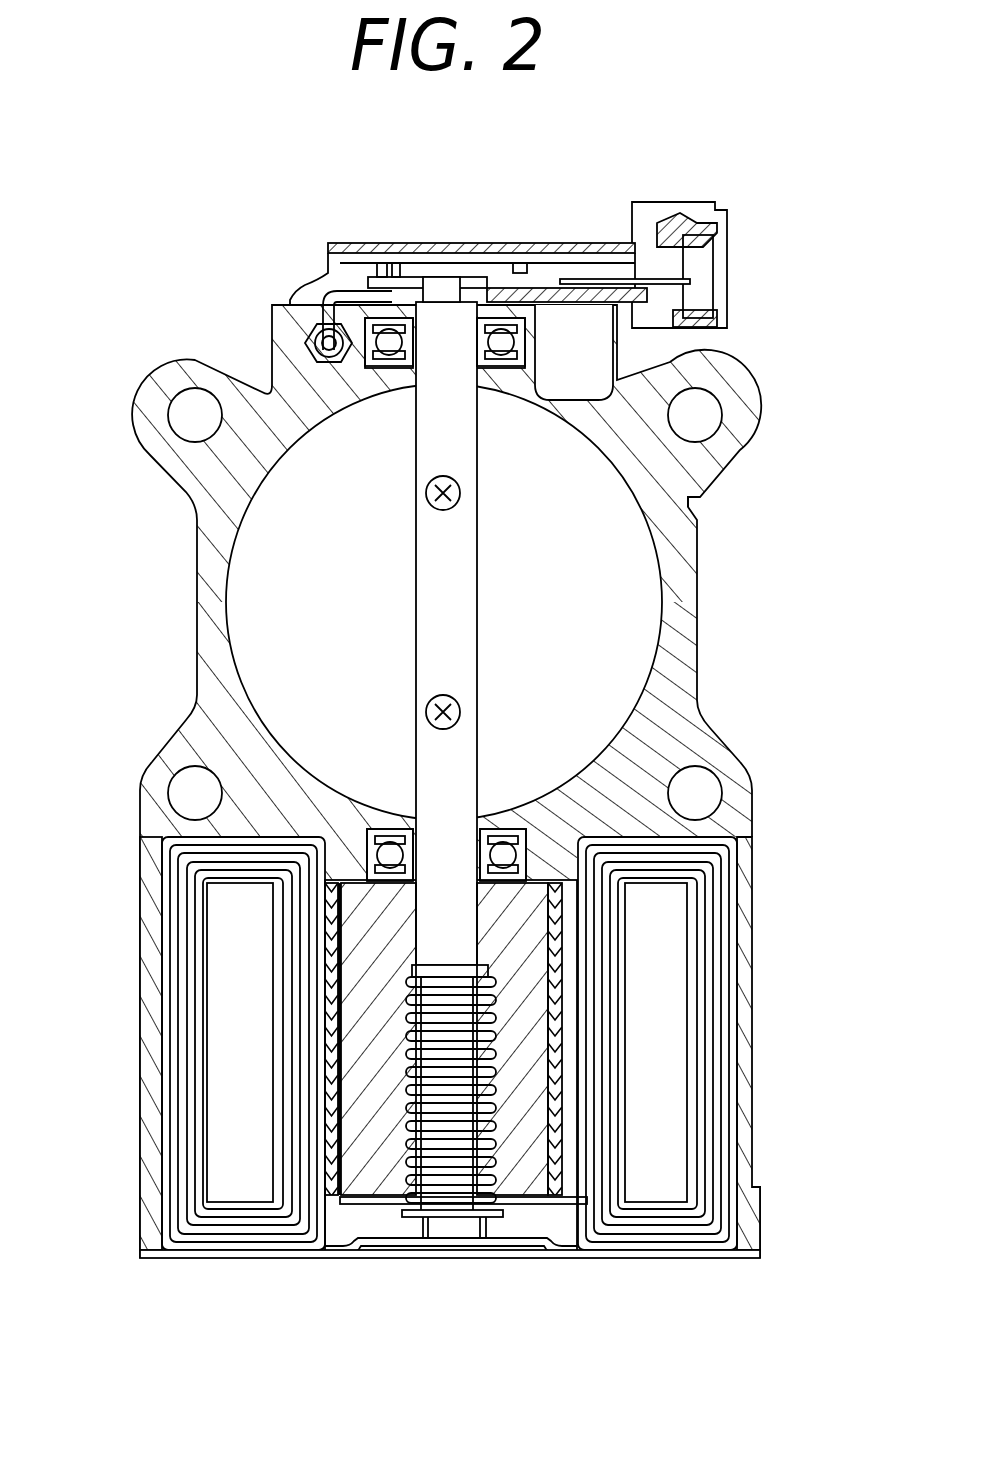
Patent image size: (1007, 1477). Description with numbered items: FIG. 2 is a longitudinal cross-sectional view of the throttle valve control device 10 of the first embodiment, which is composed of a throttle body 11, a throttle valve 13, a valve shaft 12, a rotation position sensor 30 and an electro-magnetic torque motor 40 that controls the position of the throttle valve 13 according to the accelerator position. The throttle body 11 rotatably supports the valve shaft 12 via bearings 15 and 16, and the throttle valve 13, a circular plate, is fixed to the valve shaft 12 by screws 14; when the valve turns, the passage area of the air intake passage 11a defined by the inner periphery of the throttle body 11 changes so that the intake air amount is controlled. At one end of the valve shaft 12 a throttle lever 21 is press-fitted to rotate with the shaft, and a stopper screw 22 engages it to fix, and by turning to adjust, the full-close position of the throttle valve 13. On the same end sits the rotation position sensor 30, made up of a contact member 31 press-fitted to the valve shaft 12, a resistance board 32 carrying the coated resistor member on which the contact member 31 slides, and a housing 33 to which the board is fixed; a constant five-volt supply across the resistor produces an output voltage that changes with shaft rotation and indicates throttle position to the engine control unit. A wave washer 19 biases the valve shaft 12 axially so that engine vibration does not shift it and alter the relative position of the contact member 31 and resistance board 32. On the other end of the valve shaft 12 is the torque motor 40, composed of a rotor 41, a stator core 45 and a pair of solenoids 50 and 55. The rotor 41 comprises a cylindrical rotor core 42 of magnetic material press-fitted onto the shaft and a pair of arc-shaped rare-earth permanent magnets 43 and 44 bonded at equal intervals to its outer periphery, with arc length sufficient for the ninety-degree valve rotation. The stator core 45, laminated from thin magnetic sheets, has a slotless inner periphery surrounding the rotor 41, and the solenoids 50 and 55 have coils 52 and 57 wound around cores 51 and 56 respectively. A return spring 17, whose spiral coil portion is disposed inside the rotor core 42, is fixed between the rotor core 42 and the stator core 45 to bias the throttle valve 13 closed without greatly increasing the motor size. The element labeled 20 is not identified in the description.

The throttle valve control device 10 is at (710, 537).
The throttle body 11 is at (705, 737).
The air intake passage 11a is at (652, 604).
The valve shaft 12 is at (428, 615).
The throttle valve 13 is at (633, 643).
The screws 14 is at (424, 500).
The bearing 15 is at (520, 342).
The bearing 16 is at (523, 853).
The return spring 17 is at (495, 1118).
The wave washer 19 is at (690, 497).
The bottom plate 20 is at (733, 1258).
The throttle lever 21 is at (330, 320).
The stopper screw 22 is at (317, 334).
The rotation position sensor 30 is at (474, 228).
The contact member 31 is at (470, 275).
The resistance board 32 is at (377, 257).
The housing 33 is at (655, 202).
The electro-magnetic torque motor 40 is at (768, 1188).
The rotor 41 is at (386, 1206).
The rotor core 42 is at (363, 943).
The permanent magnet 43 is at (330, 1140).
The permanent magnet 44 is at (610, 1215).
The stator core 45 is at (330, 1113).
The solenoid 50 is at (335, 1245).
The core 51 is at (218, 1028).
The coil 52 is at (182, 1112).
The solenoid 55 is at (578, 1236).
The core 56 is at (673, 955).
The coil 57 is at (723, 1033).